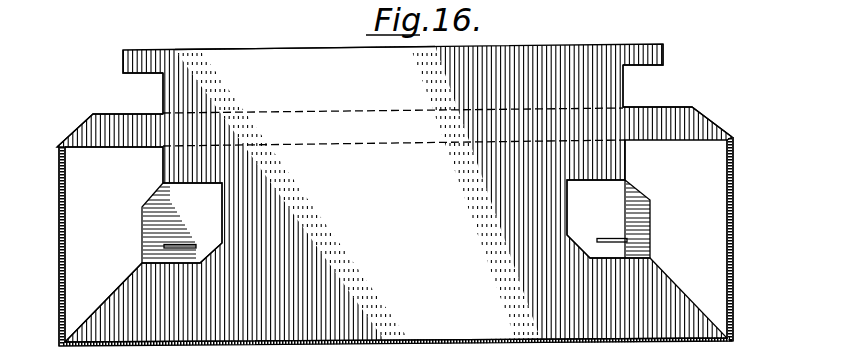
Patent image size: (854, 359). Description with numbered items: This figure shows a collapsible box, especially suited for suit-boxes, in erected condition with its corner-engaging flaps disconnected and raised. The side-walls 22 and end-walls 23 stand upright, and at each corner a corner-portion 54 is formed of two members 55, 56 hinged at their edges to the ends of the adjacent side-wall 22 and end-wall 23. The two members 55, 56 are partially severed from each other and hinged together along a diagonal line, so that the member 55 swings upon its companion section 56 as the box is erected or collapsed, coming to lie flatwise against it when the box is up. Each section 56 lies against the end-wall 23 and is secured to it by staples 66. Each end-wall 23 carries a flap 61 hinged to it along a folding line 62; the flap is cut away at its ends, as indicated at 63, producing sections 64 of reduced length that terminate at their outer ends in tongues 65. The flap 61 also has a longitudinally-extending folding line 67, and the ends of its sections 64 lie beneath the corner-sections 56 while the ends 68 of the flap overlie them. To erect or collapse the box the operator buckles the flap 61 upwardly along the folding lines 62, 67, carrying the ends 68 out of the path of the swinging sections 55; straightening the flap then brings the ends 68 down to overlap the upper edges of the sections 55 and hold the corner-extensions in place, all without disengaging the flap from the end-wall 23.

The side-wall 22 is at (60, 280).
The end-wall 23 is at (358, 195).
The corner-portion 54 is at (393, 241).
The corner member 55 is at (114, 244).
The corner member 56 is at (210, 228).
The flap 61 is at (570, 58).
The folding line 62 is at (337, 143).
The cut-away portion 63 is at (163, 75).
The section 64 is at (305, 68).
The tongue 65 is at (134, 52).
The staple 66 is at (180, 245).
The longitudinally-extending folding line 67 is at (330, 112).
The flap end 68 is at (87, 120).